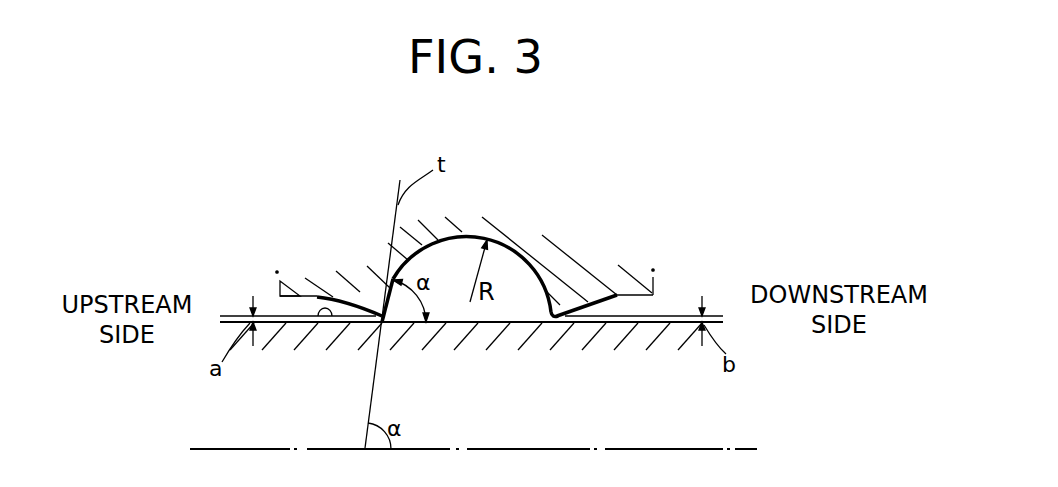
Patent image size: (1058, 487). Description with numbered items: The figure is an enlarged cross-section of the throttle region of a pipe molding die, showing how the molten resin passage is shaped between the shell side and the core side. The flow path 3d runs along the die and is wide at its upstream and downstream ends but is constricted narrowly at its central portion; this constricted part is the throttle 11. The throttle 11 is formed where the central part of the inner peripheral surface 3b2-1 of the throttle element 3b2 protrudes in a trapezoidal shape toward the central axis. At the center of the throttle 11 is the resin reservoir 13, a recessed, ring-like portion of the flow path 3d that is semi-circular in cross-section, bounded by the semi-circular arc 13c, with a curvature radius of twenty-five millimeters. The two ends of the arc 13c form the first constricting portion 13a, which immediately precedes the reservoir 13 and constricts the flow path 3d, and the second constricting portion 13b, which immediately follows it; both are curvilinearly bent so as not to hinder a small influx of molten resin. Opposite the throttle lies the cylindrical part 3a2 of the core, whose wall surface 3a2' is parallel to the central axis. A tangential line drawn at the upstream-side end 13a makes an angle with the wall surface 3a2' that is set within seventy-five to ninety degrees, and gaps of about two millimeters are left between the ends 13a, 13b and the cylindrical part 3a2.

The throttle 11 is at (363, 322).
The resin reservoir 13 is at (457, 255).
The first constricting portion 13a is at (384, 323).
The second constricting portion 13b is at (558, 318).
The semi-circular arc 13c is at (525, 256).
The cylindrical part 3a2 is at (644, 273).
The wall surface 3a2' is at (298, 355).
The throttle element 3b2 is at (358, 280).
The inner peripheral surface 3b2-1 is at (296, 303).
The flow path 3d is at (576, 322).